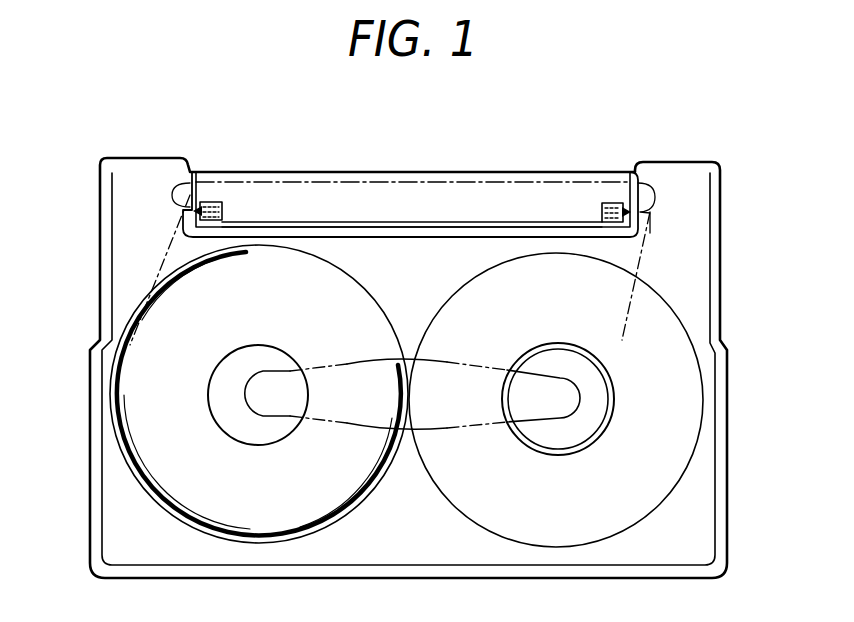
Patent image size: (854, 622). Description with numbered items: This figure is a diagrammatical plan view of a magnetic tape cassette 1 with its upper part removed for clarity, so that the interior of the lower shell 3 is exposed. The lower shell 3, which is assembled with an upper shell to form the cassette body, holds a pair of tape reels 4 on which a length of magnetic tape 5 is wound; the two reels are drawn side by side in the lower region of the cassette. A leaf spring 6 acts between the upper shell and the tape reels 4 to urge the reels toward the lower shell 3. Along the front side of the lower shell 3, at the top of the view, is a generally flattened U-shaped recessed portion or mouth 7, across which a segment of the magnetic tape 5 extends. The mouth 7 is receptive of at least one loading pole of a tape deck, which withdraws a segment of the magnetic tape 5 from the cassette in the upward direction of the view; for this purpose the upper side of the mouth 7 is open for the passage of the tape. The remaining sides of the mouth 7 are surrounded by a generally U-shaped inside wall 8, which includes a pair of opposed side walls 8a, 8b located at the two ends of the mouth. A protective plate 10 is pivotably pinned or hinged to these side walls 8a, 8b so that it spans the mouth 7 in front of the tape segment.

The magnetic tape cassette 1 is at (760, 376).
The lower shell 3 is at (728, 500).
The tape reels 4 is at (210, 410).
The magnetic tape 5 is at (501, 183).
The leaf spring 6 is at (446, 360).
The mouth 7 is at (455, 213).
The inside wall 8 is at (498, 240).
The side wall 8a is at (180, 227).
The side wall 8b is at (648, 226).
The protective plate 10 is at (410, 172).